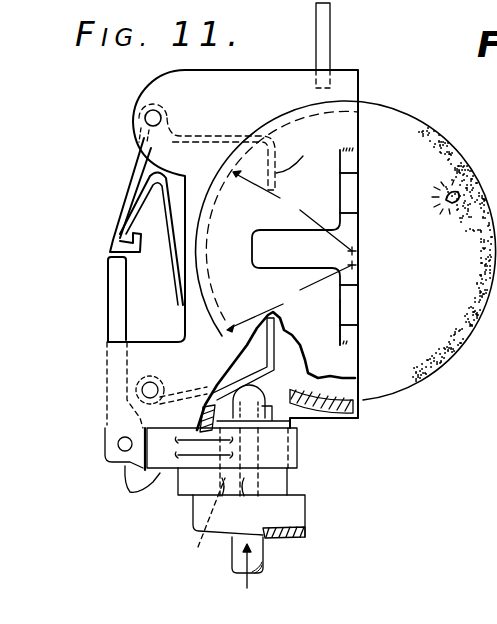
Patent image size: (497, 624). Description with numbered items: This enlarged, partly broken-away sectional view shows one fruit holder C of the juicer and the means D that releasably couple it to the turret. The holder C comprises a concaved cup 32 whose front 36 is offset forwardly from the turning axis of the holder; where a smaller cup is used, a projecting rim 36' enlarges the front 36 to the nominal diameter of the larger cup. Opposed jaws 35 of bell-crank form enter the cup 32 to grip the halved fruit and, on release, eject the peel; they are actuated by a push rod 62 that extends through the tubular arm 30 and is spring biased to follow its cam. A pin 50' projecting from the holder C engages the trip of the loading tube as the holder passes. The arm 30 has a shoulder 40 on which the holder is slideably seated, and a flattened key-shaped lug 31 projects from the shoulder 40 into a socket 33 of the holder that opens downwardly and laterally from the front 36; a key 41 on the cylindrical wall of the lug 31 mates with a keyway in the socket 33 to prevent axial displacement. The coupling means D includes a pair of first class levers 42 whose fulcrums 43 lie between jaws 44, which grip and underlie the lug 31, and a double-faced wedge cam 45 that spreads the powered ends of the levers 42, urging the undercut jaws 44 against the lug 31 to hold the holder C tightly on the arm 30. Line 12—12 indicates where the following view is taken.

The pin 50' is at (349, 45).
The cup 32 is at (348, 135).
The jaws 35 is at (276, 283).
The projecting rim 36' is at (372, 249).
The front of the cup 36 is at (373, 332).
The key 41 is at (200, 413).
The lug 31 is at (277, 423).
The jaws 44 is at (297, 457).
The shoulder 40 is at (297, 495).
The fulcrums 43 is at (249, 516).
The arm 30 is at (298, 527).
The push rod 62 is at (265, 558).
The socket 33 is at (206, 523).
The levers 42 is at (170, 471).
The cam 45 is at (125, 490).
The line 12— 12 is at (93, 490).
The fruit holder C is at (133, 121).
The coupling means D is at (303, 449).